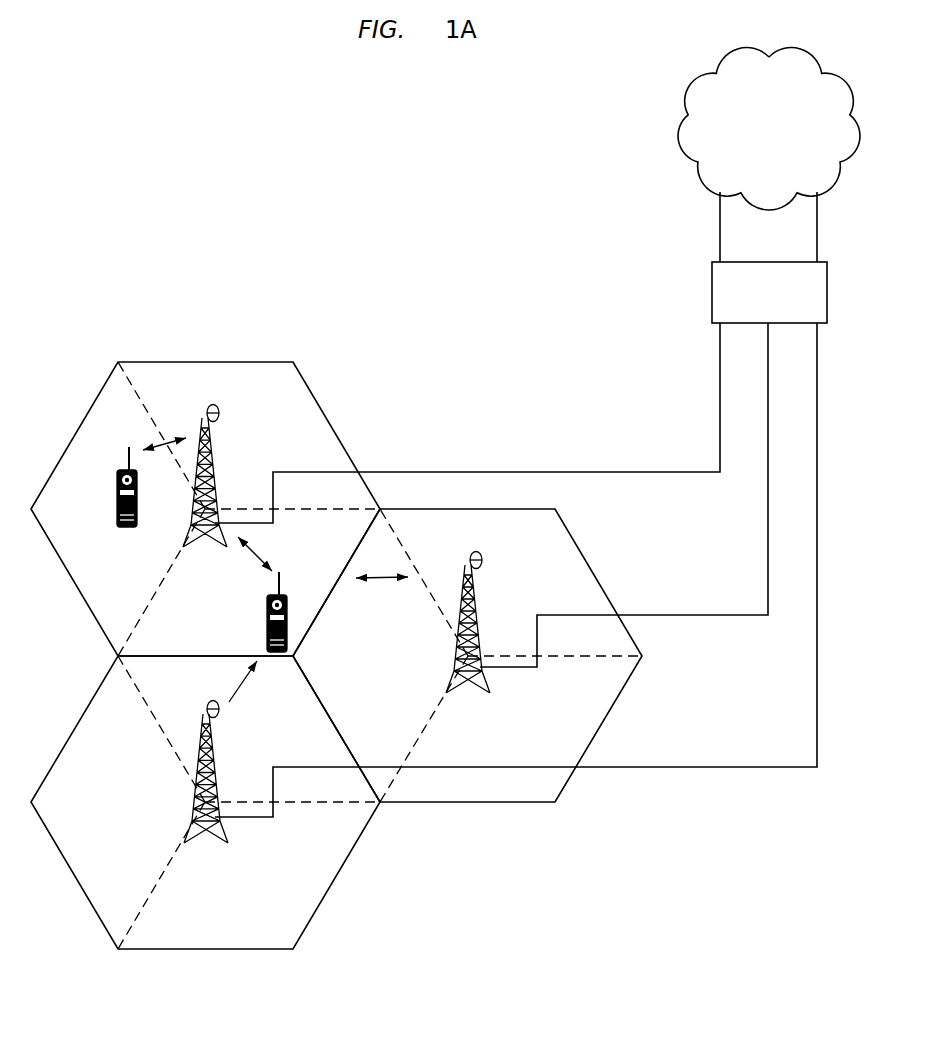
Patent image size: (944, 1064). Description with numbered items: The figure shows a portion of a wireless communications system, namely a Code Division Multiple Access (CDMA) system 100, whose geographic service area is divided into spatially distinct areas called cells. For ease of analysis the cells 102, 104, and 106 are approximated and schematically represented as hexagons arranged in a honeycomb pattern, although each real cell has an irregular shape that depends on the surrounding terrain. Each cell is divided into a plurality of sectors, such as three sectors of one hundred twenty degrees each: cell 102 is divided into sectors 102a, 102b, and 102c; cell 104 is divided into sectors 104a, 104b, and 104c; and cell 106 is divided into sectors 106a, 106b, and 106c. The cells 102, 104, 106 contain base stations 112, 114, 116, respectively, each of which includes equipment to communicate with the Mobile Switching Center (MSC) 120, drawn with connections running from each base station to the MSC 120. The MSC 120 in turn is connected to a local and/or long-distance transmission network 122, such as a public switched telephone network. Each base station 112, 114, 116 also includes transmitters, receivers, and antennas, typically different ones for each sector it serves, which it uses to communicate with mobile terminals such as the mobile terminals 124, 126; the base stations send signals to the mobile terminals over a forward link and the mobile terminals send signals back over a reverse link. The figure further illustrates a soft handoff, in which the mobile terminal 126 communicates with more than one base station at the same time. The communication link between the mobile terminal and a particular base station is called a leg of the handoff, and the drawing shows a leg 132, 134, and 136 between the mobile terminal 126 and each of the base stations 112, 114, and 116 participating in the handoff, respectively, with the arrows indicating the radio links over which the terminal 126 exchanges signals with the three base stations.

The CDMA system 100 is at (421, 246).
The cell 102 is at (240, 362).
The sector 102a is at (83, 522).
The sector 102b is at (202, 393).
The sector 102c is at (202, 650).
The cell 104 is at (506, 509).
The sector 104a is at (349, 667).
The sector 104b is at (467, 537).
The sector 104c is at (467, 795).
The cell 106 is at (96, 912).
The sector 106a is at (84, 813).
The sector 106b is at (202, 688).
The sector 106c is at (204, 943).
The base station 112 is at (218, 462).
The base station 114 is at (480, 612).
The base station 116 is at (218, 758).
The Mobile Switching Center 120 is at (712, 320).
The transmission network 122 is at (705, 180).
The mobile terminal 124 is at (127, 527).
The mobile terminal 126 is at (267, 636).
The leg 132 is at (258, 564).
The leg 134 is at (387, 582).
The leg 136 is at (244, 682).